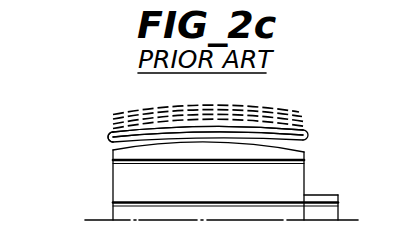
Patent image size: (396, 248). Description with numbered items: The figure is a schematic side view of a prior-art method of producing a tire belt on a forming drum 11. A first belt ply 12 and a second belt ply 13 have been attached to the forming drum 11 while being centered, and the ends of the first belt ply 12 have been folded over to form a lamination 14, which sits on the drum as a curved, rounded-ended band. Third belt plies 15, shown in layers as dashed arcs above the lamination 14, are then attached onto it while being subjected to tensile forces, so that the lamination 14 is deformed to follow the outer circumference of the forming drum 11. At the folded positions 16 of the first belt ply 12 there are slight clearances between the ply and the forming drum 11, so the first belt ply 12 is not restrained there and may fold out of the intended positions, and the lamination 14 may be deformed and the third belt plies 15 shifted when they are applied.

The forming drum 11 is at (305, 183).
The first belt ply 12 is at (112, 138).
The second belt ply 13 is at (217, 128).
The lamination 14 is at (175, 133).
The third belt plies 15 is at (300, 121).
The folded positions 16 is at (304, 140).